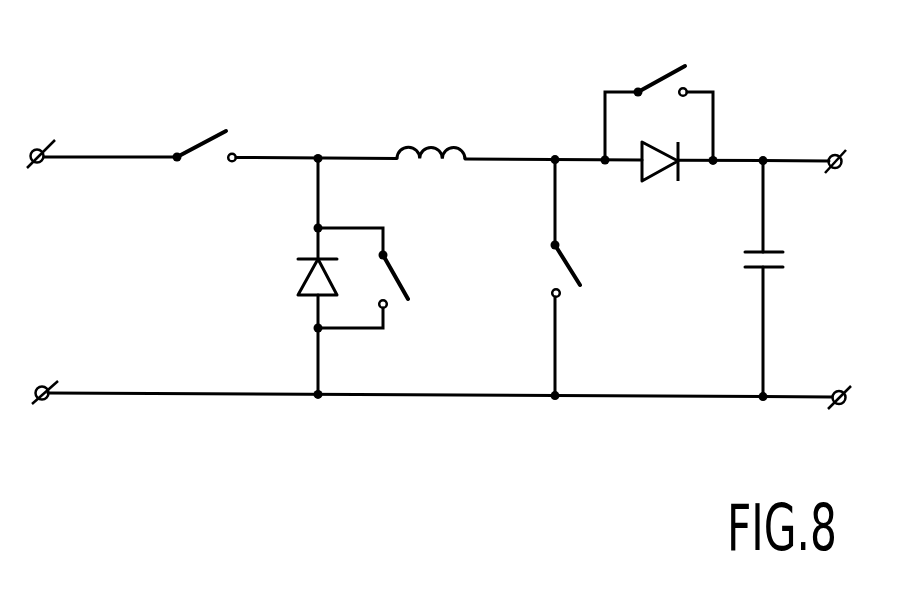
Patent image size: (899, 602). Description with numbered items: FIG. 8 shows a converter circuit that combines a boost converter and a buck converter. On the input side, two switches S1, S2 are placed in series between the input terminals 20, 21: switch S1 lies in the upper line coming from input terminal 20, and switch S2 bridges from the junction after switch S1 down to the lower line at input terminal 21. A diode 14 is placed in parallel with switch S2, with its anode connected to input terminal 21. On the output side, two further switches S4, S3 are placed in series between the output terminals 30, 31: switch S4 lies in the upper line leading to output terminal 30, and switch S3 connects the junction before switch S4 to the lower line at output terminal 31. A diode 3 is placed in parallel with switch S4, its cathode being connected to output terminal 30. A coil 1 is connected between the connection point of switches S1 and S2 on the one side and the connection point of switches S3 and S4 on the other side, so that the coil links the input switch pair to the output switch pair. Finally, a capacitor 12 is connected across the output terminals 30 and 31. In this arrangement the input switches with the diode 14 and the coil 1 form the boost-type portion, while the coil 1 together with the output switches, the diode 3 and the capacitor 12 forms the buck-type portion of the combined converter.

The coil 1 is at (431, 133).
The diode 3 is at (656, 168).
The capacitor 12 is at (785, 253).
The diode 14 is at (312, 280).
The input terminal 20 is at (37, 149).
The input terminal 21 is at (39, 386).
The output terminal 30 is at (832, 154).
The output terminal 31 is at (836, 390).
The switch S1 is at (206, 136).
The switch S2 is at (398, 286).
The switch S3 is at (567, 262).
The switch S4 is at (661, 75).